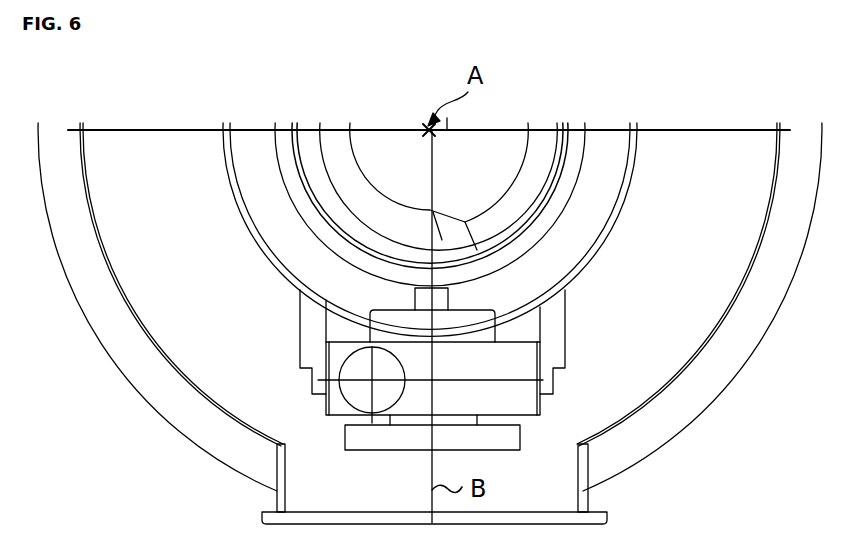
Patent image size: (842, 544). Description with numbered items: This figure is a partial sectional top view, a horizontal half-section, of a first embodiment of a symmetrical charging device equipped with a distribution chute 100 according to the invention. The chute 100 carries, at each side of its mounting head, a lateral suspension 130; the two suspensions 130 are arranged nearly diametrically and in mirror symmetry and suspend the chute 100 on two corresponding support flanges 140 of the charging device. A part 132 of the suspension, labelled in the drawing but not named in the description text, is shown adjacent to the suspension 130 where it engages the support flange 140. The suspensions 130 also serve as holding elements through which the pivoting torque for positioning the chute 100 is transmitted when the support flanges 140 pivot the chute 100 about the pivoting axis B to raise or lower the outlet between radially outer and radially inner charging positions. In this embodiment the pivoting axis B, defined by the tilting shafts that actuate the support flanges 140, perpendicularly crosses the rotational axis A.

The chute 100 is at (386, 124).
The lateral suspension 130 is at (449, 281).
The ring of rotating member 132 is at (470, 293).
The support flange 140 is at (391, 319).